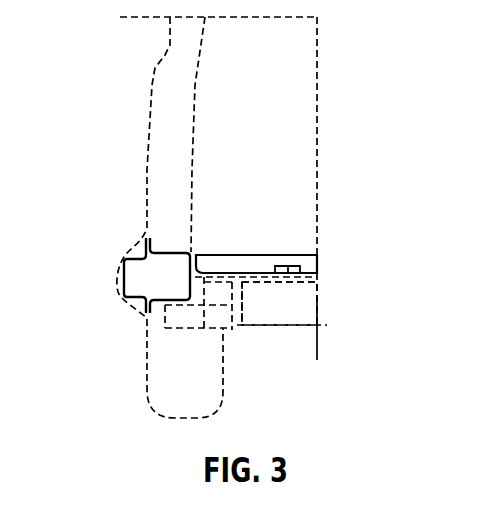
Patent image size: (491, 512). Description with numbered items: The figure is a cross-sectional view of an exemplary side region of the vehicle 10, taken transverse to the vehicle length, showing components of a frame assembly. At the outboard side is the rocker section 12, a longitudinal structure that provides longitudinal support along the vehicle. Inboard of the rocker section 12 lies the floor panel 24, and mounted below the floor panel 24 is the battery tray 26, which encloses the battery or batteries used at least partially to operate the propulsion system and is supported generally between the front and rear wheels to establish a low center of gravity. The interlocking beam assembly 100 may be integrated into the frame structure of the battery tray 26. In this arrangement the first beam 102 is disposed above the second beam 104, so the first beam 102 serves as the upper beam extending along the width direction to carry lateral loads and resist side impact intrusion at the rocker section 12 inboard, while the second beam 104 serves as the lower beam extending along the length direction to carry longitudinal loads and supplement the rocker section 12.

The vehicle 10 is at (106, 70).
The rocker section 12 is at (140, 273).
The floor panel 24 is at (243, 277).
The battery tray 26 is at (333, 326).
The interlocking beam assembly 100 is at (333, 278).
The first beam 102 is at (219, 259).
The second beam 104 is at (293, 265).